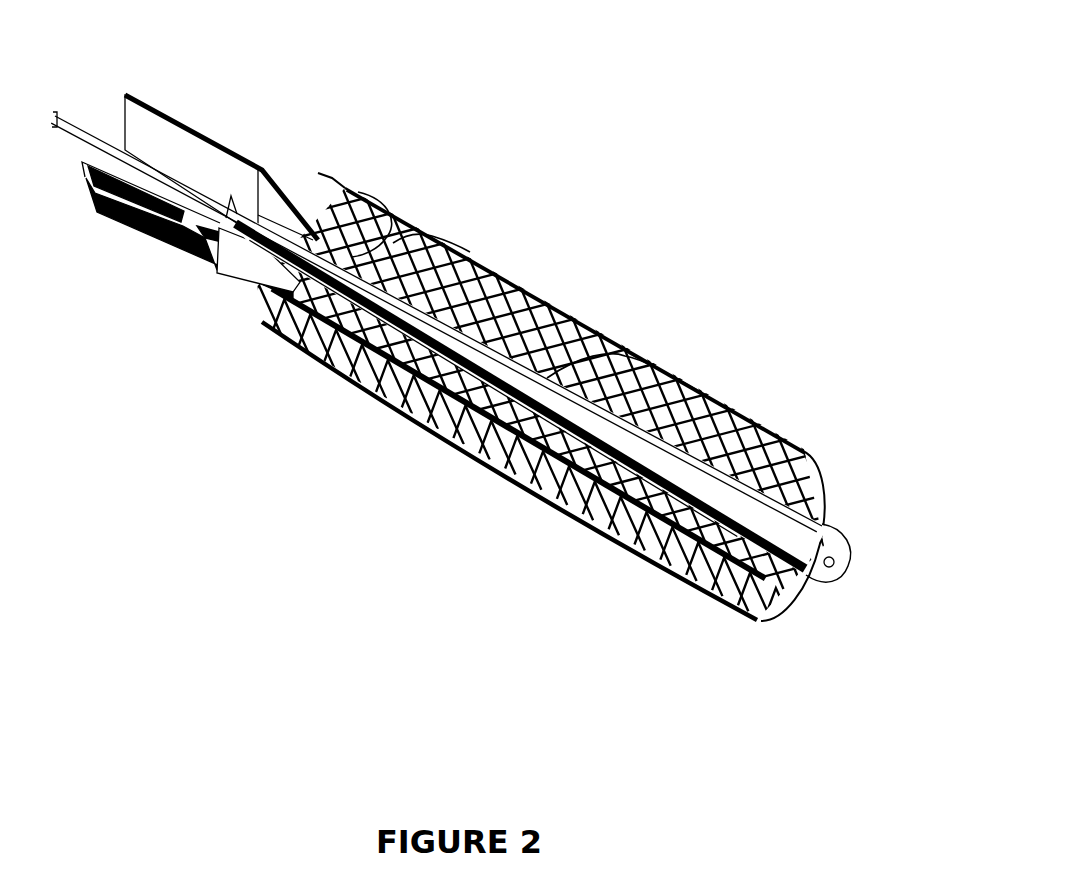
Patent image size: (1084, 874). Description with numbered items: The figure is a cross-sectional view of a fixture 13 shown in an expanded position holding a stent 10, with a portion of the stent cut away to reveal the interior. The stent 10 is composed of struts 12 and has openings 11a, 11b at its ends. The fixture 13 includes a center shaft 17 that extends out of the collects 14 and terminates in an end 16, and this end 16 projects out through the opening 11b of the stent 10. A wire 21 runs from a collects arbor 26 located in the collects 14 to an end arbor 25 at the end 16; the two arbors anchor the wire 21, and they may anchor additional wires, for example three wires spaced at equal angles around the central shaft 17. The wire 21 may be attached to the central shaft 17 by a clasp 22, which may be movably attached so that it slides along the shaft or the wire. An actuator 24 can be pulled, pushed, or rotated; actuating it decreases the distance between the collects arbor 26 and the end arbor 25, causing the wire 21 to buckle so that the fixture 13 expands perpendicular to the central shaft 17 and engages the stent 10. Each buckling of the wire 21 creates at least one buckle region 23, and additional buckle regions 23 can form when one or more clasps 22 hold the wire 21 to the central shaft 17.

The stent 10 is at (408, 532).
The opening 11a is at (338, 222).
The opening 11b is at (807, 488).
The struts 12 is at (782, 425).
The fixture 13 is at (323, 92).
The collects 14 is at (137, 232).
The end 16 is at (828, 572).
The center shaft 17 is at (703, 385).
The wire 21 is at (480, 297).
The clasp 22 is at (587, 318).
The buckle region 23 is at (427, 227).
The actuator 24 is at (98, 121).
The end arbor 25 is at (727, 603).
The collects arbor 26 is at (242, 243).